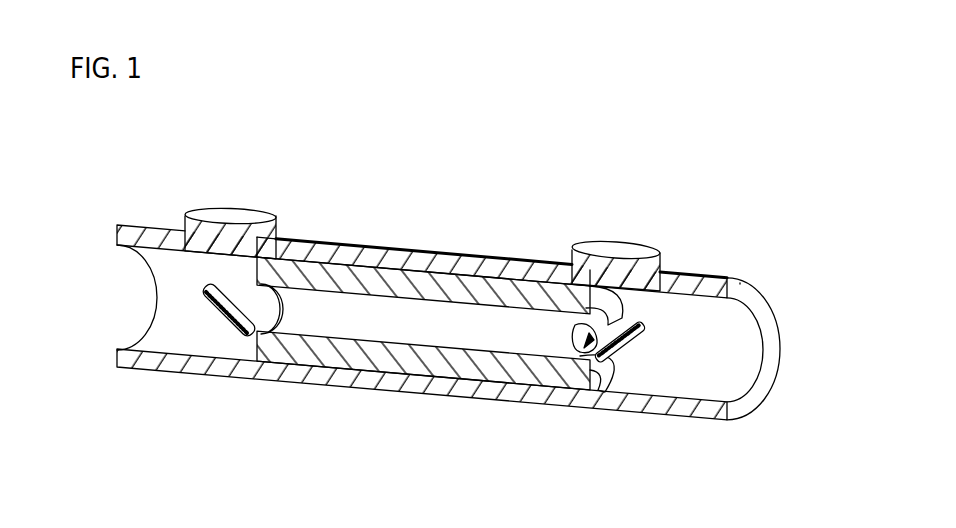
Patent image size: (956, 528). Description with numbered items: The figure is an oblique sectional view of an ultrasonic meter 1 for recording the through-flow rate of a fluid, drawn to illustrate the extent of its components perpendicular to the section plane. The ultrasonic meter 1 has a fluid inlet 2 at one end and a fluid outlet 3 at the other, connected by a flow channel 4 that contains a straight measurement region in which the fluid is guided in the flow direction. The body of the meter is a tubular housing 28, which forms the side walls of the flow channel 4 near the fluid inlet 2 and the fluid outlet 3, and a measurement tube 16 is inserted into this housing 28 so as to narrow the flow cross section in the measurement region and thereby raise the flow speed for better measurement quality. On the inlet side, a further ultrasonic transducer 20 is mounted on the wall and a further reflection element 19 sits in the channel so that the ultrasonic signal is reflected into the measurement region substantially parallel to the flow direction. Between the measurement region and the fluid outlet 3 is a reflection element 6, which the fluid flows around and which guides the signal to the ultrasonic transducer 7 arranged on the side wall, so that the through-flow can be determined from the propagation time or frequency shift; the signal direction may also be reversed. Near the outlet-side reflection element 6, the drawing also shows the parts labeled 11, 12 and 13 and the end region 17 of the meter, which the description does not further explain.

The ultrasonic meter 1 is at (423, 210).
The fluid inlet 2 is at (142, 300).
The fluid outlet 3 is at (793, 330).
The flow channel 4 is at (355, 322).
The reflection element 6 is at (628, 343).
The ultrasonic transducer 7 is at (617, 268).
The curved tab 11 is at (620, 311).
The retaining element 12 is at (598, 355).
The lower curved tab 13 is at (596, 378).
The measurement tube 16 is at (380, 353).
The end cavity 17 is at (720, 340).
The further reflection element 19 is at (225, 305).
The further ultrasonic transducer 20 is at (220, 230).
The housing 28 is at (312, 250).